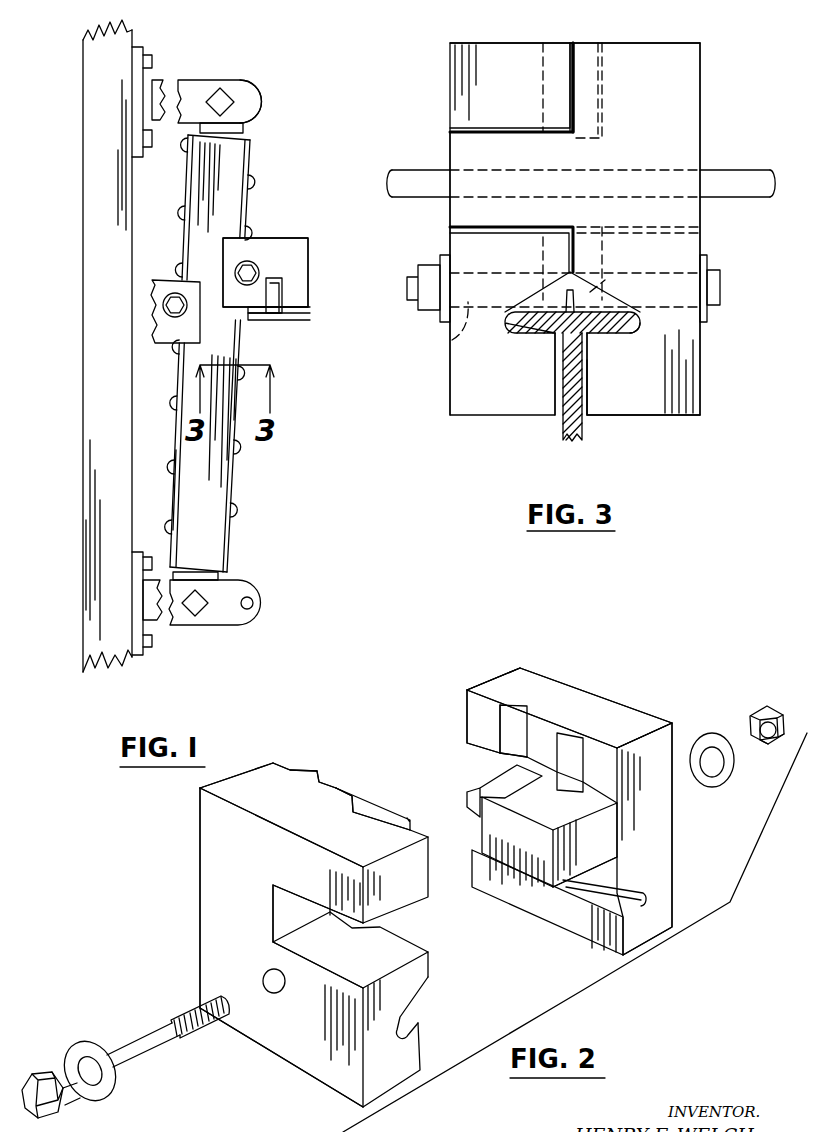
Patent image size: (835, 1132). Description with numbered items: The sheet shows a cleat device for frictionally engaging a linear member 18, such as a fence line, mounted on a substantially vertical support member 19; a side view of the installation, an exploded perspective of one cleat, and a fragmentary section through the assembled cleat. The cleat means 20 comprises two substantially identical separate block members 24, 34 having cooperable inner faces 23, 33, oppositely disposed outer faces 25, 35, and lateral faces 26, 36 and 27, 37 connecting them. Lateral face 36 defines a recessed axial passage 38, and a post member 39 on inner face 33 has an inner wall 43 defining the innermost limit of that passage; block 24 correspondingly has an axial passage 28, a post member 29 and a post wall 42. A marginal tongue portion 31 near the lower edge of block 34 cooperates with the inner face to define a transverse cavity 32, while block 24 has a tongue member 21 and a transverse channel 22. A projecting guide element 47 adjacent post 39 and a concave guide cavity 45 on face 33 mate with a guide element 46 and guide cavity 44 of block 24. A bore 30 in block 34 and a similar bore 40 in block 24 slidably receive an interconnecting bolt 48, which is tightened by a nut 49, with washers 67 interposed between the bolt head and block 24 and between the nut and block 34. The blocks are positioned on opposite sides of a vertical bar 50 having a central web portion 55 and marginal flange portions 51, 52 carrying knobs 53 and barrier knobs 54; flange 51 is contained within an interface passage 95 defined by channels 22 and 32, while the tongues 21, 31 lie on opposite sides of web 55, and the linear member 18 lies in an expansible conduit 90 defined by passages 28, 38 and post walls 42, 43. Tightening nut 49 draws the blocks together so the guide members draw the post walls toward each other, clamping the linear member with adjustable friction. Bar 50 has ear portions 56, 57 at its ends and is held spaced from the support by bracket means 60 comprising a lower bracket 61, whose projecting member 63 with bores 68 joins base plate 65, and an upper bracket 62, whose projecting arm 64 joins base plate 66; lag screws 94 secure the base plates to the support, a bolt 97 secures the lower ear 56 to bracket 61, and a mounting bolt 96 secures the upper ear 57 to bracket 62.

In FIG. 1, the linear member 18 is at (262, 273).
In FIG. 3, the linear member 18 is at (722, 170).
In FIG. 1, the support member 19 is at (117, 252).
In FIG. 1, the cleat means 20 is at (260, 238).
In FIG. 2, the cleat means 20 is at (200, 788).
In FIG. 3, the cleat means 20 is at (450, 46).
In FIG. 2, the tongue member 21 is at (424, 1046).
In FIG. 3, the tongue member 21 is at (554, 400).
In FIG. 2, the transverse channel 22 is at (409, 1022).
In FIG. 3, the transverse channel 22 is at (552, 340).
In FIG. 2, the inner face 23 is at (280, 765).
In FIG. 3, the inner face 23 is at (575, 80).
In FIG. 1, the block member 24 is at (280, 238).
In FIG. 2, the block member 24 is at (205, 873).
In FIG. 3, the block member 24 is at (450, 415).
In FIG. 2, the outer face 25 is at (215, 828).
In FIG. 3, the outer face 25 is at (450, 380).
In FIG. 2, the lateral face 26 is at (375, 1090).
In FIG. 3, the lateral face 26 is at (478, 43).
In FIG. 2, the lateral face 27 is at (240, 780).
In FIG. 1, the axial passage 28 is at (278, 321).
In FIG. 2, the axial passage 28 is at (392, 948).
In FIG. 2, the post member 29 is at (355, 792).
In FIG. 2, the bore 30 is at (146, 1050).
In FIG. 3, the bore 30 is at (700, 270).
In FIG. 2, the tongue portion 31 is at (594, 932).
In FIG. 3, the tongue portion 31 is at (588, 400).
In FIG. 2, the transverse cavity 32 is at (632, 897).
In FIG. 3, the transverse cavity 32 is at (594, 336).
In FIG. 2, the inner face 33 is at (480, 722).
In FIG. 3, the inner face 33 is at (568, 75).
In FIG. 1, the block member 34 is at (286, 312).
In FIG. 2, the block member 34 is at (530, 668).
In FIG. 3, the block member 34 is at (700, 52).
In FIG. 2, the outer face 35 is at (578, 685).
In FIG. 3, the outer face 35 is at (700, 76).
In FIG. 2, the lateral face 36 is at (517, 672).
In FIG. 2, the lateral face 37 is at (658, 829).
In FIG. 3, the lateral face 37 is at (680, 48).
In FIG. 2, the recessed axial passage 38 is at (466, 757).
In FIG. 2, the post member 39 is at (500, 840).
In FIG. 3, the post member 39 is at (450, 148).
In FIG. 2, the bore 40 is at (264, 976).
In FIG. 3, the bore 40 is at (450, 341).
In FIG. 2, the post wall 42 is at (290, 909).
In FIG. 3, the post wall 42 is at (450, 131).
In FIG. 2, the inner wall 43 is at (478, 787).
In FIG. 2, the guide cavity 44 is at (345, 804).
In FIG. 3, the guide cavity 44 is at (540, 68).
In FIG. 2, the guide cavity 45 is at (512, 702).
In FIG. 3, the guide cavity 45 is at (605, 95).
In FIG. 2, the guide element 46 is at (311, 772).
In FIG. 3, the guide element 46 is at (608, 62).
In FIG. 2, the guide element 47 is at (571, 740).
In FIG. 3, the guide element 47 is at (573, 65).
In FIG. 2, the bolt 48 is at (46, 1072).
In FIG. 3, the bolt 48 is at (720, 290).
In FIG. 2, the nut 49 is at (784, 712).
In FIG. 3, the nut 49 is at (428, 265).
In FIG. 1, the bar 50 is at (230, 566).
In FIG. 3, the bar 50 is at (563, 438).
In FIG. 1, the flange portion 51 is at (240, 481).
In FIG. 3, the flange portion 51 is at (628, 334).
In FIG. 1, the flange portion 52 is at (186, 186).
In FIG. 1, the knobs 53 is at (244, 450).
In FIG. 3, the knobs 53 is at (600, 290).
In FIG. 1, the barrier knobs 54 is at (185, 231).
In FIG. 1, the web portion 55 is at (218, 522).
In FIG. 3, the web portion 55 is at (584, 438).
In FIG. 1, the ear portion 56 is at (220, 579).
In FIG. 1, the ear portion 57 is at (245, 132).
In FIG. 1, the bracket means 60 is at (196, 80).
In FIG. 1, the bracket 61 is at (258, 620).
In FIG. 1, the bracket 62 is at (258, 82).
In FIG. 1, the projecting member 63 is at (243, 628).
In FIG. 1, the projecting arm 64 is at (262, 102).
In FIG. 1, the base plate 65 is at (140, 655).
In FIG. 1, the base plate 66 is at (140, 50).
In FIG. 2, the washers 67 is at (106, 1047).
In FIG. 3, the washers 67 is at (445, 255).
In FIG. 1, the bores 68 is at (253, 604).
In FIG. 1, the conduit 90 is at (283, 292).
In FIG. 1, the lag screws 94 is at (153, 60).
In FIG. 3, the interface passage 95 is at (552, 292).
In FIG. 1, the mounting bolt 96 is at (226, 88).
In FIG. 1, the bolt 97 is at (201, 616).